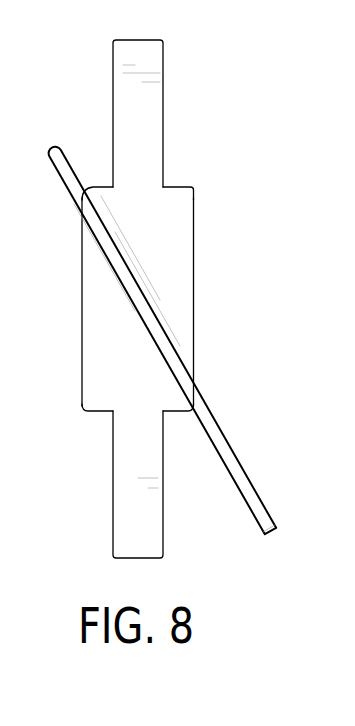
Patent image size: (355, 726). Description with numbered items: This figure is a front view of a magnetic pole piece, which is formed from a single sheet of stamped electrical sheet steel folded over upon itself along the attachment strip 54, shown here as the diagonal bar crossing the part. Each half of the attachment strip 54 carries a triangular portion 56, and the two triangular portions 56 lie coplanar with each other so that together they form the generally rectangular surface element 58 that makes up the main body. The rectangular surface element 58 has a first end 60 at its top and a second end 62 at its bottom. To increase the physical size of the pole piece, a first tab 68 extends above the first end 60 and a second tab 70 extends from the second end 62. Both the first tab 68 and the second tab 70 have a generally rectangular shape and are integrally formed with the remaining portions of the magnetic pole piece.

The attachment strip 54 is at (182, 367).
The triangular portion 56 is at (168, 252).
The rectangular surface element 58 is at (177, 200).
The first end 60 is at (108, 186).
The second end 62 is at (170, 412).
The first tab 68 is at (142, 125).
The second tab 70 is at (123, 513).